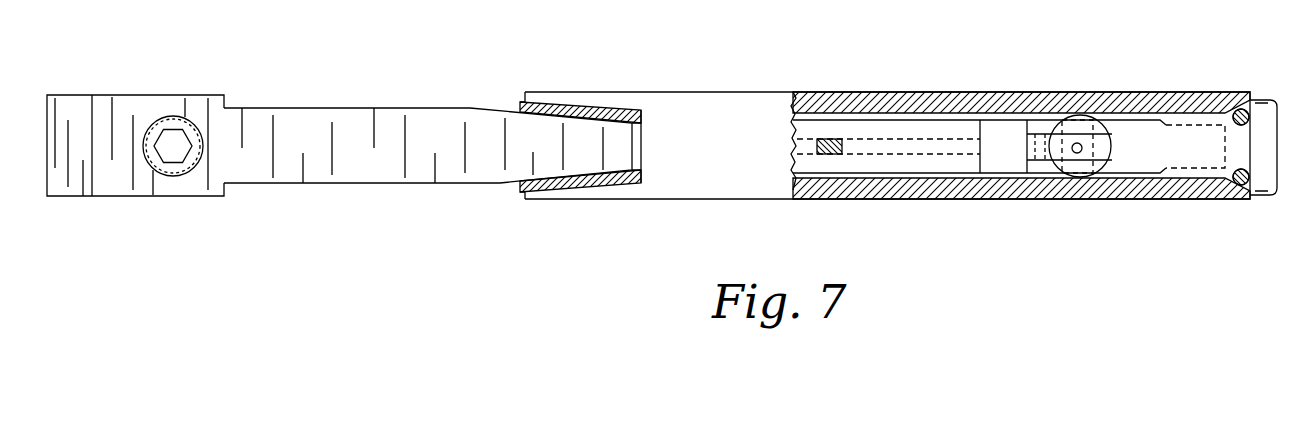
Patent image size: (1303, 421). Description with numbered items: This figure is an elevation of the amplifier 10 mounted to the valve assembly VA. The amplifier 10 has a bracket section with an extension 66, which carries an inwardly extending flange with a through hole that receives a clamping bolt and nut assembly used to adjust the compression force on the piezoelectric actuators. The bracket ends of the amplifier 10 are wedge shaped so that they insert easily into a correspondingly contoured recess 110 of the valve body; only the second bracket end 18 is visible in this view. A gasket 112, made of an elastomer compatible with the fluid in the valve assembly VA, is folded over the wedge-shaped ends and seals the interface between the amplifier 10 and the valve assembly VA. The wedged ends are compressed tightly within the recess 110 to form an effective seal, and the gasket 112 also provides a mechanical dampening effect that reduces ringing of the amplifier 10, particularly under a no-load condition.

The amplifier 10 is at (340, 196).
The second bracket end 18 is at (507, 183).
The extension 66 is at (76, 193).
The recess 110 is at (597, 112).
The gasket 112 is at (573, 200).
The valve assembly VA is at (1062, 82).